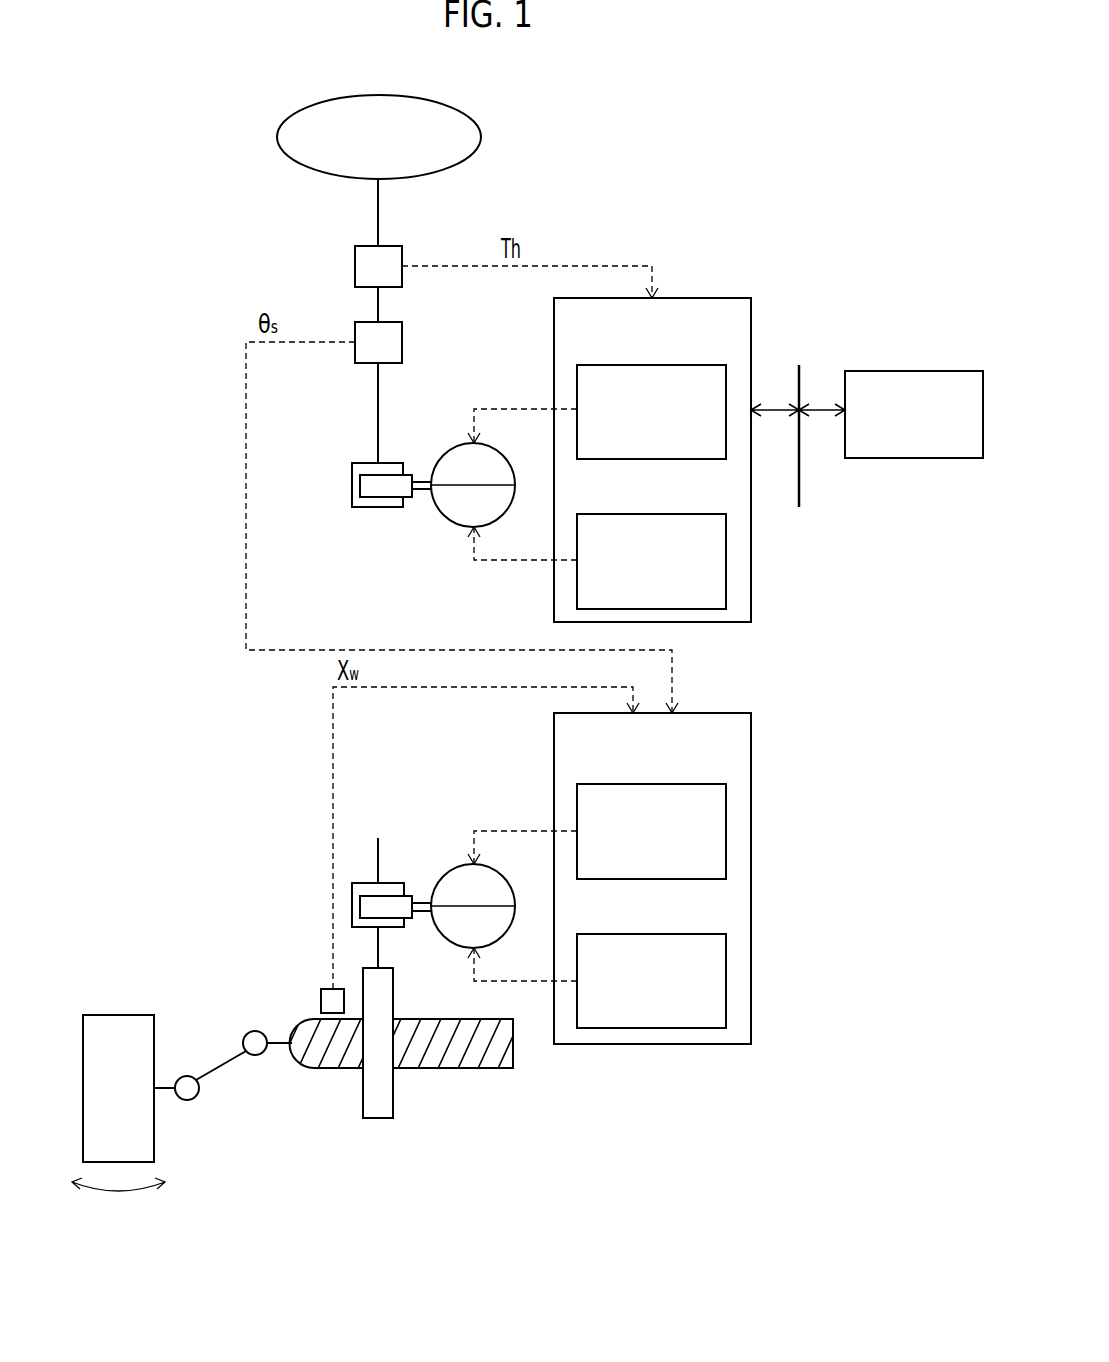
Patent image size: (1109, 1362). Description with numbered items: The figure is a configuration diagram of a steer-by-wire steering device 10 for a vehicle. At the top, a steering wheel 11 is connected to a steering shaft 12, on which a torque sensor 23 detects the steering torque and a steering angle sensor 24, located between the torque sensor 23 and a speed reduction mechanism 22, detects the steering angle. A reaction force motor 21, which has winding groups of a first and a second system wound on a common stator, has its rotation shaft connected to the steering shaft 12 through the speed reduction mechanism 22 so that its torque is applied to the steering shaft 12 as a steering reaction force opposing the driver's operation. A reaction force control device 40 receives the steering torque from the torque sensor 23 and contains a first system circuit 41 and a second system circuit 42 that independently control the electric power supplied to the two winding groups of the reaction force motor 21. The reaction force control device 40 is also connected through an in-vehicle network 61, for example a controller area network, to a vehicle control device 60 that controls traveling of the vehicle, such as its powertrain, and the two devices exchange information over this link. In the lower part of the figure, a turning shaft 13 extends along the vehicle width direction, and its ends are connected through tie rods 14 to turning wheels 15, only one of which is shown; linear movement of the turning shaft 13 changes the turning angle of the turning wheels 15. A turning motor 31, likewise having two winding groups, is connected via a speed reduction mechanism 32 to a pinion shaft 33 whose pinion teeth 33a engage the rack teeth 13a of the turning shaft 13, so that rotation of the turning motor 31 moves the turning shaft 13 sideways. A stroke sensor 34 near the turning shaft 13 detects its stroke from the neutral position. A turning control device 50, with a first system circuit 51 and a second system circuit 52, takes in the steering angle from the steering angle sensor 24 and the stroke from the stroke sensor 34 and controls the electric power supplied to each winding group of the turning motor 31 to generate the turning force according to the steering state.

The steering device 10 is at (222, 283).
The steering wheel 11 is at (277, 137).
The steering shaft 12 is at (378, 210).
The turning shaft 13 is at (400, 1067).
The pinion teeth 13a is at (432, 1052).
The tie rod 14 is at (217, 1065).
The turning wheel 15 is at (118, 1015).
The reaction force motor 21 is at (443, 452).
The speed reduction mechanism 22 is at (346, 522).
The torque sensor 23 is at (355, 268).
The steering angle sensor 24 is at (362, 364).
The turning motor 31 is at (442, 872).
The speed reduction mechanism 32 is at (401, 858).
The pinion shaft 33 is at (385, 948).
The pinion teeth 33a is at (393, 990).
The stroke sensor 34 is at (322, 983).
The reaction force control device 40 is at (652, 428).
The first system circuit 41 is at (680, 459).
The second system circuit 42 is at (611, 514).
The turning control device 50 is at (652, 847).
The first system circuit 51 is at (679, 879).
The second system circuit 52 is at (611, 934).
The vehicle control device 60 is at (888, 371).
The in-vehicle network 61 is at (801, 382).